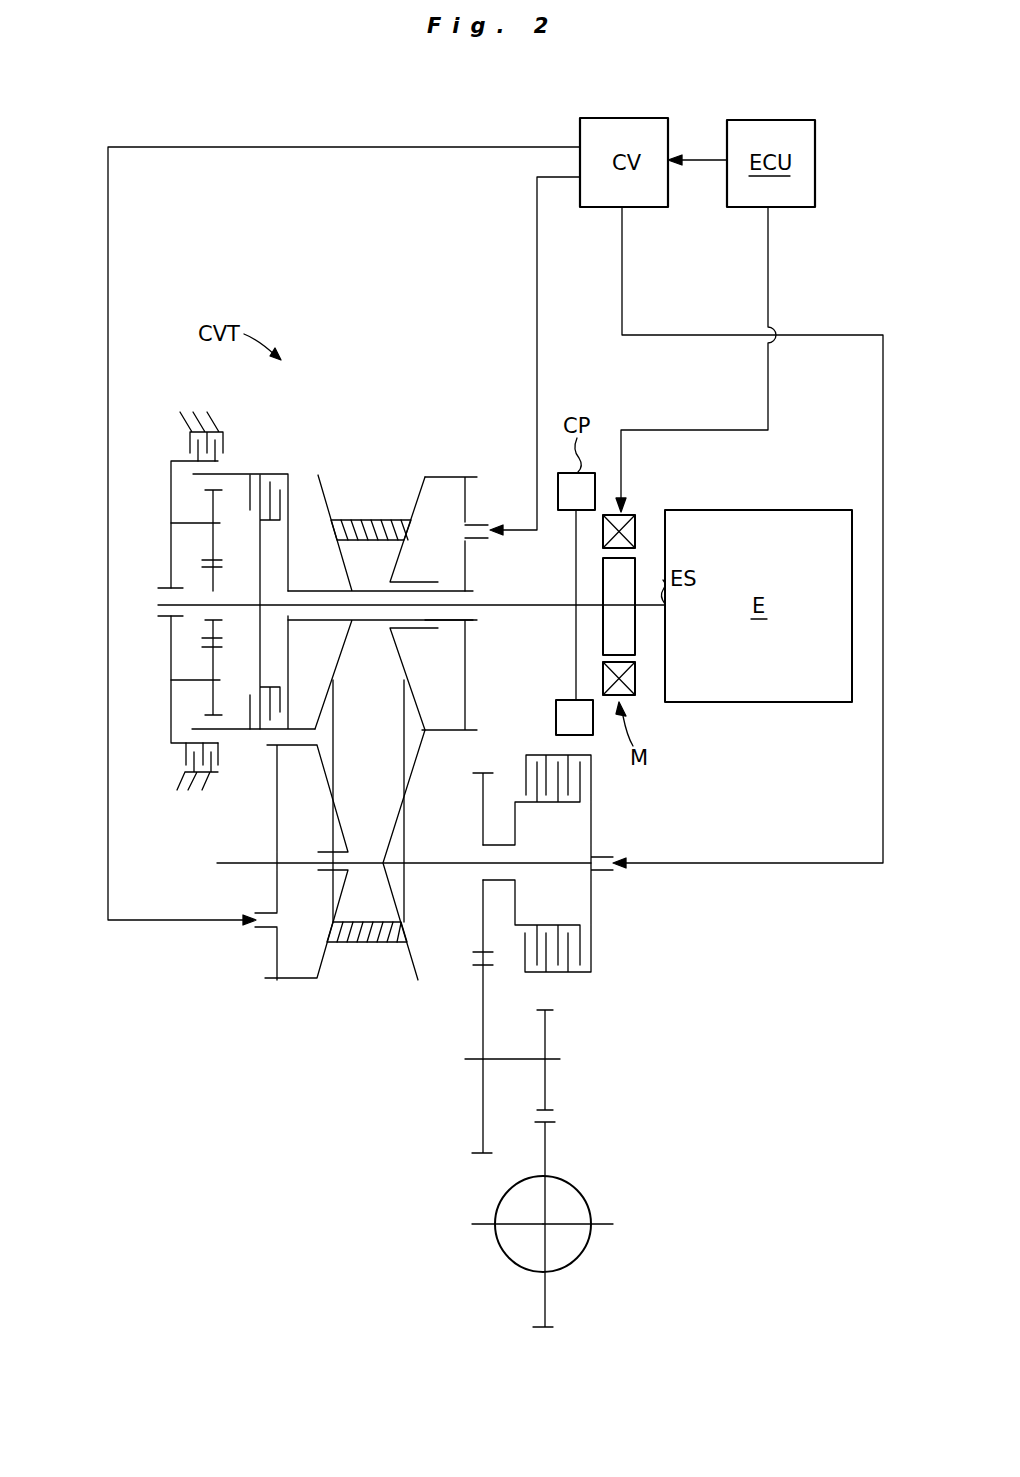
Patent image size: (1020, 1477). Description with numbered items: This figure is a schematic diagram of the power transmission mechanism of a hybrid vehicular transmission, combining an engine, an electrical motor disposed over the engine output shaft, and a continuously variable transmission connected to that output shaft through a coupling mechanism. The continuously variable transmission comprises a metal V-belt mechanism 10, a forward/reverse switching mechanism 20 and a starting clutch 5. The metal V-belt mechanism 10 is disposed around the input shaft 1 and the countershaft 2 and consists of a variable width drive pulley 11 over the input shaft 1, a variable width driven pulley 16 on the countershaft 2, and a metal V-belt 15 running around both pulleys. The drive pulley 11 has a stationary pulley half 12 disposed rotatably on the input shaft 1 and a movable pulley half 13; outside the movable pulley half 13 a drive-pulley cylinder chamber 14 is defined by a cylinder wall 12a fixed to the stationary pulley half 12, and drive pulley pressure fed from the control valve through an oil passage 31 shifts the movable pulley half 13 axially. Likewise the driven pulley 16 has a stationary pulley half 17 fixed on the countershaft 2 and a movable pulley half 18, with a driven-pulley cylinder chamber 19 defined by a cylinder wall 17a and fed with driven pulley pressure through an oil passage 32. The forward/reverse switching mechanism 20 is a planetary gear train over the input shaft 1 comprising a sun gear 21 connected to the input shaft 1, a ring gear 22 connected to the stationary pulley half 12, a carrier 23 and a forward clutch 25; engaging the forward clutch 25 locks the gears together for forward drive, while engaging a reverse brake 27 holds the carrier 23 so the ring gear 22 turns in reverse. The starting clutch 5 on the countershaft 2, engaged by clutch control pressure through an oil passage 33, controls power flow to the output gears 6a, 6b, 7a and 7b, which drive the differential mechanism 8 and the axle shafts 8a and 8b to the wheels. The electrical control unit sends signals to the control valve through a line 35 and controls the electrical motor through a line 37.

The input shaft 1 is at (528, 612).
The countershaft 2 is at (446, 868).
The starting clutch 5 is at (602, 948).
The gear 6a is at (482, 807).
The gear 6b is at (473, 1154).
The gear 7a is at (548, 1037).
The gear 7b is at (548, 1152).
The differential mechanism 8 is at (508, 1256).
The axle shaft 8a is at (482, 1223).
The axle shaft 8b is at (604, 1222).
The metal V-belt mechanism 10 is at (417, 556).
The drive pulley 11 is at (449, 469).
The stationary pulley half 12 is at (329, 492).
The cylinder wall 12a is at (468, 569).
The movable pulley half 13 is at (404, 492).
The drive-pulley cylinder chamber 14 is at (446, 546).
The metal V-belt 15 is at (409, 736).
The driven pulley 16 is at (311, 882).
The stationary pulley half 17 is at (413, 976).
The cylinder wall 17a is at (276, 827).
The movable pulley half 18 is at (328, 962).
The driven-pulley cylinder chamber 19 is at (321, 839).
The forward/reverse switching mechanism 20 is at (218, 570).
The sun gear 21 is at (210, 588).
The ring gear 22 is at (202, 730).
The carrier 23 is at (171, 497).
The forward clutch 25 is at (268, 473).
The reverse brake 27 is at (189, 442).
The oil passage 31 is at (538, 262).
The oil passage 32 is at (342, 143).
The oil passage 33 is at (883, 335).
The line 35 is at (694, 158).
The line 37 is at (769, 262).